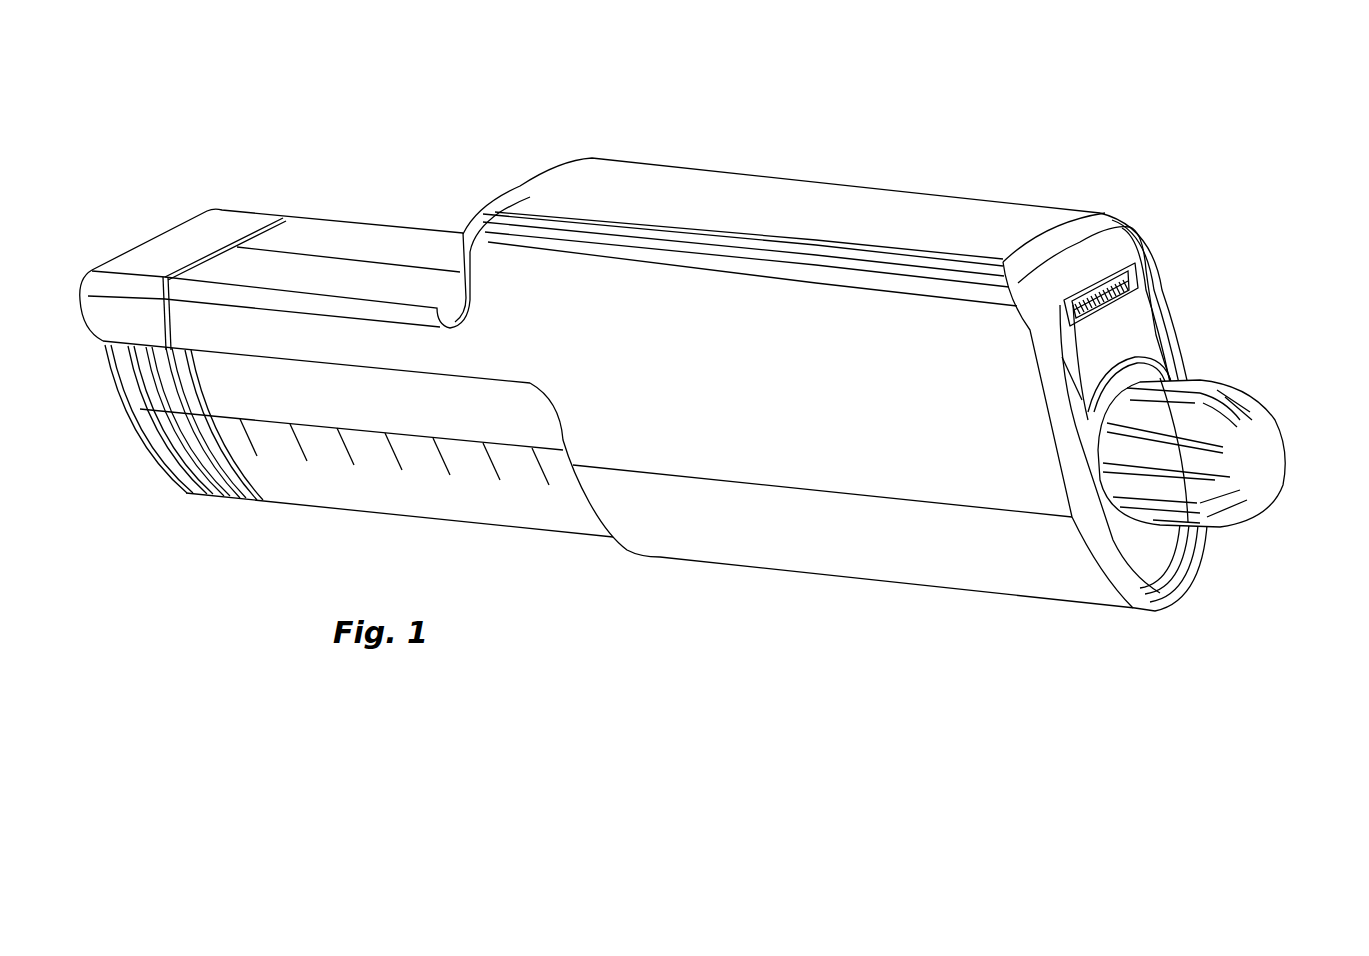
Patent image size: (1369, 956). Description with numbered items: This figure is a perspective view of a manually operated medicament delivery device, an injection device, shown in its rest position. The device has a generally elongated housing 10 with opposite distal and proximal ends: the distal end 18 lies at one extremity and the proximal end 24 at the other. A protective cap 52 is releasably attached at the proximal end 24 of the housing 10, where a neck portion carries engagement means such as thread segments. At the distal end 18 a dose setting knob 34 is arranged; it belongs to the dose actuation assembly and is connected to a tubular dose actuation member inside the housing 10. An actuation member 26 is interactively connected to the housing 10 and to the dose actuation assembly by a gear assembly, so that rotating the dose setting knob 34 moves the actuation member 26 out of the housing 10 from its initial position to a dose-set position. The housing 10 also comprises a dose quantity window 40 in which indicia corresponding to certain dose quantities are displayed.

The housing 10 is at (777, 424).
The distal end 18 is at (1159, 198).
The proximal end 24 is at (254, 192).
The actuation member 26 is at (883, 233).
The dose setting knob 34 is at (1257, 460).
The dose quantity window 40 is at (1160, 291).
The protective cap 52 is at (157, 243).